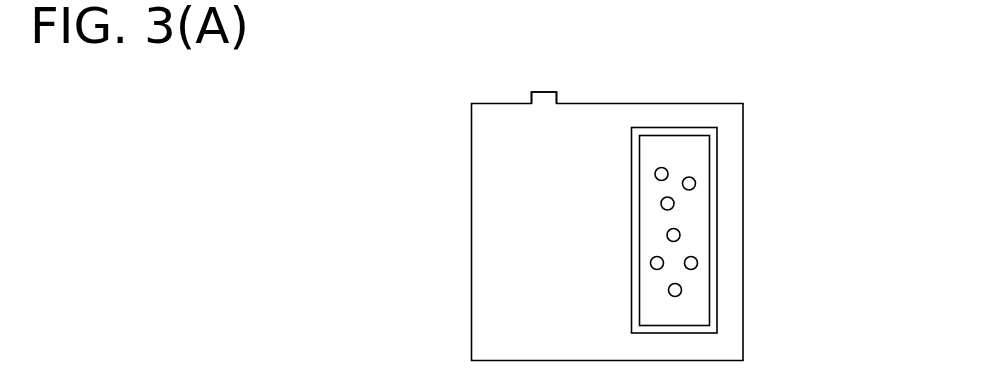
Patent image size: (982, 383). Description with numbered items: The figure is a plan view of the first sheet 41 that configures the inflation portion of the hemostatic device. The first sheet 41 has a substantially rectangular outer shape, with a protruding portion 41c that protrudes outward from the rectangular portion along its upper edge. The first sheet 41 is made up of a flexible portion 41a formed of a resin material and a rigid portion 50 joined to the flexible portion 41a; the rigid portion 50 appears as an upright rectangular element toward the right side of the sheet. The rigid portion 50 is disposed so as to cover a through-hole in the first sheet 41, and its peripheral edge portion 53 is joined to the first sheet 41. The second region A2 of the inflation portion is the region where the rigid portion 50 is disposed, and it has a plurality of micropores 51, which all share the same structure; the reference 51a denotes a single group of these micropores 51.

The first sheet 41 is at (323, 94).
The flexible portion 41a is at (728, 140).
The protruding portion 41c is at (558, 97).
The peripheral edge portion 53 is at (713, 167).
The rigid portion 50 is at (702, 226).
The micropores 51 is at (700, 258).
The group of micropores 51a is at (690, 284).
The second region A2 is at (832, 218).